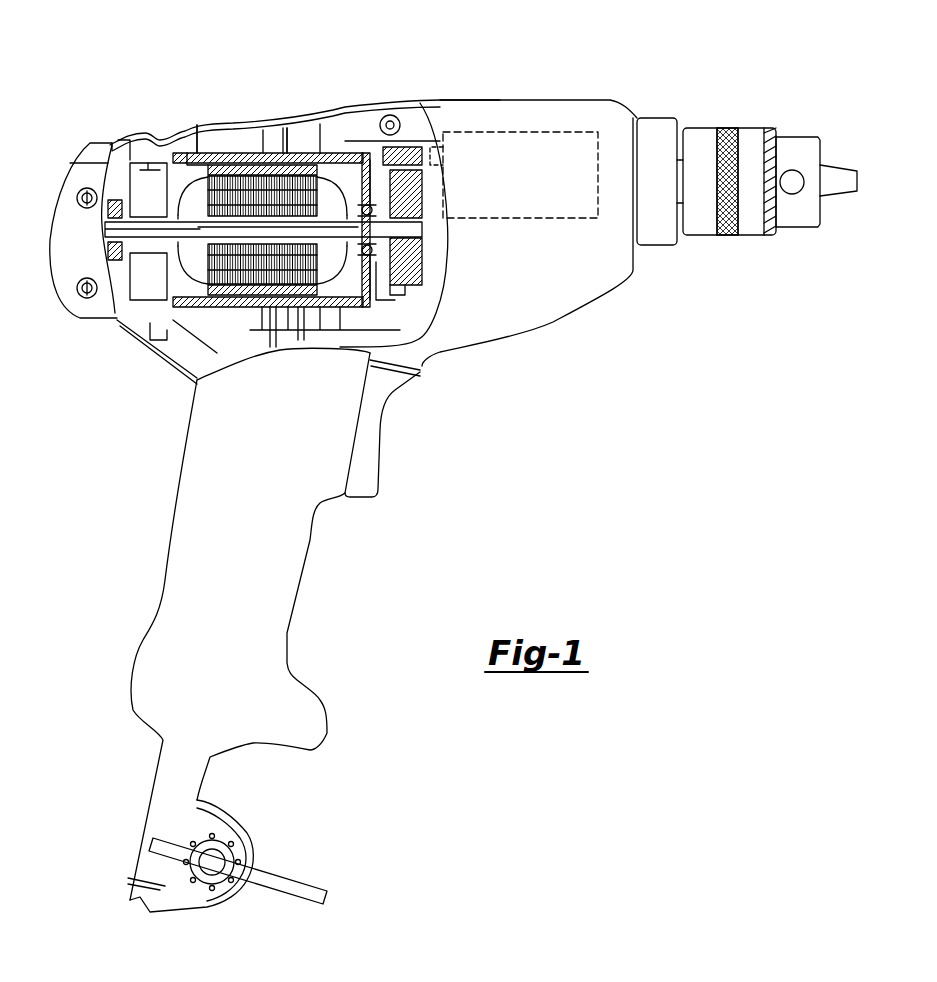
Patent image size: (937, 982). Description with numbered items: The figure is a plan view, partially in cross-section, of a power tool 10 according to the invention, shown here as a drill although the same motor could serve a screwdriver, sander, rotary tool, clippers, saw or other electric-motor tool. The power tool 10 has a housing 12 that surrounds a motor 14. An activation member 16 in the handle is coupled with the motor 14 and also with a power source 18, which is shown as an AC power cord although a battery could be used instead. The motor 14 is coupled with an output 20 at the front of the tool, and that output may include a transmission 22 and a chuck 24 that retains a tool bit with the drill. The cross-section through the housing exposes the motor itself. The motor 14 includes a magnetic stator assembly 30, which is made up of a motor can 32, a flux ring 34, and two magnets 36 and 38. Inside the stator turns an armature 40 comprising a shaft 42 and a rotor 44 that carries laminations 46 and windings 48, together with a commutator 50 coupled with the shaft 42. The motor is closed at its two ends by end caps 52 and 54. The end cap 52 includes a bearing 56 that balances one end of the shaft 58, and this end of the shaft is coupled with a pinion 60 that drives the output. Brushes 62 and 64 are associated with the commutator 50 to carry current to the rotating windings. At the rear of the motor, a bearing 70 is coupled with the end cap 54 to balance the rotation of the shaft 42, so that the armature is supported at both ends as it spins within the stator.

The power tool 10 is at (545, 380).
The housing 12 is at (500, 100).
The motor 14 is at (230, 143).
The activation member 16 is at (387, 422).
The power source 18 is at (140, 867).
The output 20 is at (417, 197).
The transmission 22 is at (548, 132).
The chuck 24 is at (747, 137).
The magnetic stator assembly 30 is at (272, 160).
The motor can 32 is at (202, 158).
The flux ring 34 is at (278, 346).
The magnet 36 is at (298, 340).
The magnet 38 is at (285, 150).
The armature 40 is at (253, 287).
The shaft 42 is at (417, 227).
The rotor 44 is at (118, 140).
The laminations 46 is at (308, 187).
The windings 48 is at (462, 77).
The commutator 50 is at (110, 180).
The end cap 52 is at (373, 165).
The end cap 54 is at (107, 248).
The bearing 56 is at (362, 216).
The shaft 58 is at (385, 233).
The pinion 60 is at (420, 283).
The brush 62 is at (150, 207).
The brush 64 is at (147, 280).
The bearing 70 is at (107, 222).